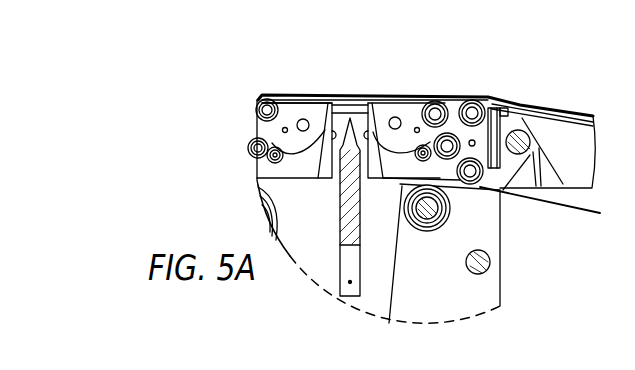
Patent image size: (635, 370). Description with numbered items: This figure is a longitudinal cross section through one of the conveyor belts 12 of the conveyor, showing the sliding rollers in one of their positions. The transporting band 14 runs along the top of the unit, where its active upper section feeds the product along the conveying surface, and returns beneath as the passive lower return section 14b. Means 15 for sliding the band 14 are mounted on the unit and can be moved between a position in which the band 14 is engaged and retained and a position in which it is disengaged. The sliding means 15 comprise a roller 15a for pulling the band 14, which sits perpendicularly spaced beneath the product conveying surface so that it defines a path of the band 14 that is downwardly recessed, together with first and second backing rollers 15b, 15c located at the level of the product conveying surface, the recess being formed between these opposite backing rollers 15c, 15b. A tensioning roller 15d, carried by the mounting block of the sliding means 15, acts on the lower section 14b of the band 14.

The conveyor belt 12 is at (276, 91).
The transporting band 14 is at (307, 96).
The passive lower return section 14b is at (553, 205).
The sliding means 15 is at (378, 94).
The pulling roller 15a is at (495, 100).
The first backing roller 15b is at (437, 100).
The second backing roller 15c is at (471, 100).
The tensioning roller 15d is at (480, 189).